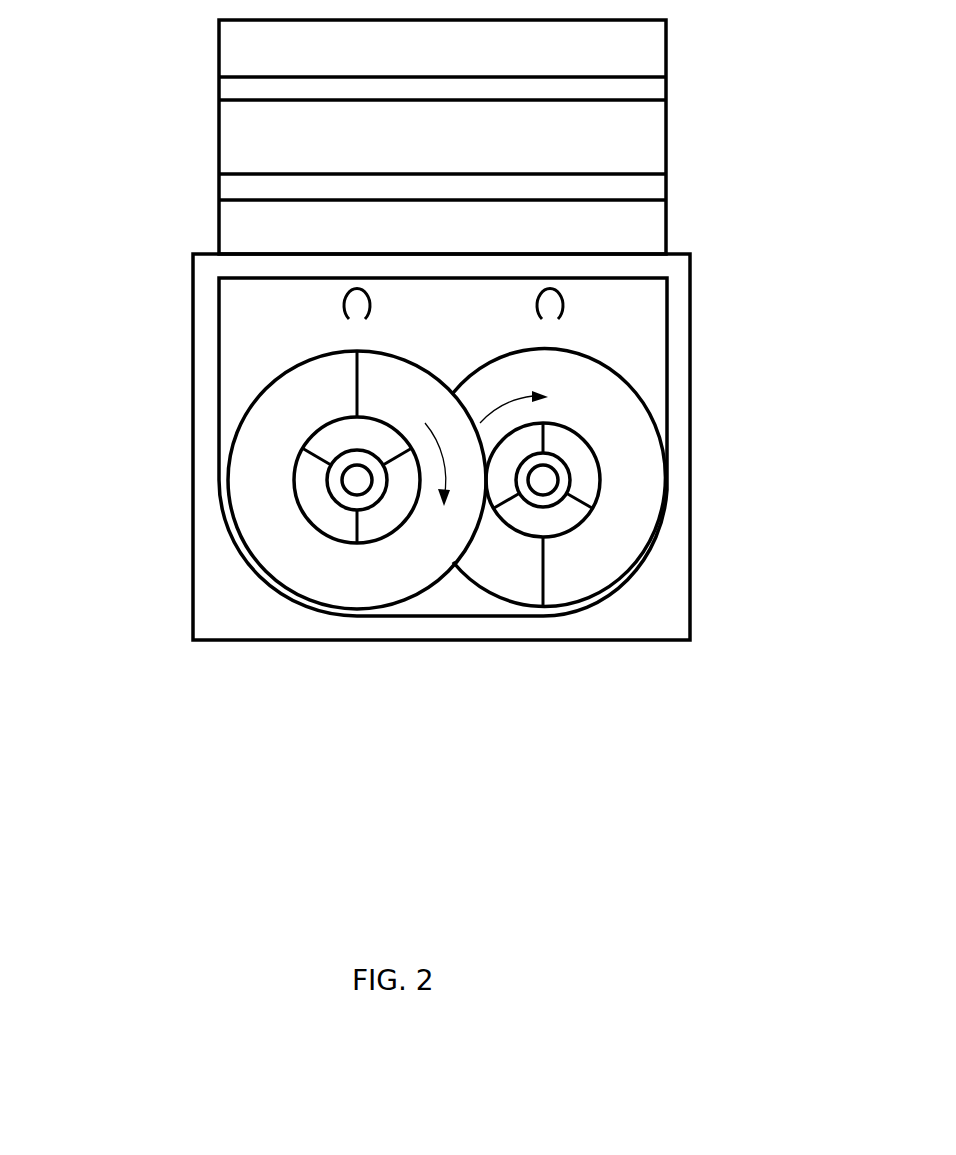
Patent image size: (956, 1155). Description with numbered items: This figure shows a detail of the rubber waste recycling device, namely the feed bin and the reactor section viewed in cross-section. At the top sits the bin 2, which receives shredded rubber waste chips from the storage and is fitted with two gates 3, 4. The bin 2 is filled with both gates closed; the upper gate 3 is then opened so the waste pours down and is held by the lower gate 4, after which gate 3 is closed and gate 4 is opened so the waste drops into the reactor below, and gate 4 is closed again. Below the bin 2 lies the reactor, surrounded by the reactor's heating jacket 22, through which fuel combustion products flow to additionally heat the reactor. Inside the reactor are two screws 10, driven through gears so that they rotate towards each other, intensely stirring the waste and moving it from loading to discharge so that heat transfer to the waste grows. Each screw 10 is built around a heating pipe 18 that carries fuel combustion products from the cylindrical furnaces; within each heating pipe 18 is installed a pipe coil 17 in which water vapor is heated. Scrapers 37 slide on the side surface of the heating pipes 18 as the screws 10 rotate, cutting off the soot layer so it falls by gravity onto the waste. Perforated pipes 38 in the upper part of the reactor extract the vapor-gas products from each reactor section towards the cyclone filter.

The bin 2 is at (657, 146).
The gate 3 is at (232, 83).
The gate 4 is at (226, 188).
The screws 10 is at (333, 568).
The pipe coils 17 is at (348, 495).
The heating pipes 18 is at (327, 480).
The reactor's heating jacket 22 is at (672, 388).
The scrapers 37 is at (581, 493).
The perforated pipes 38 is at (360, 302).